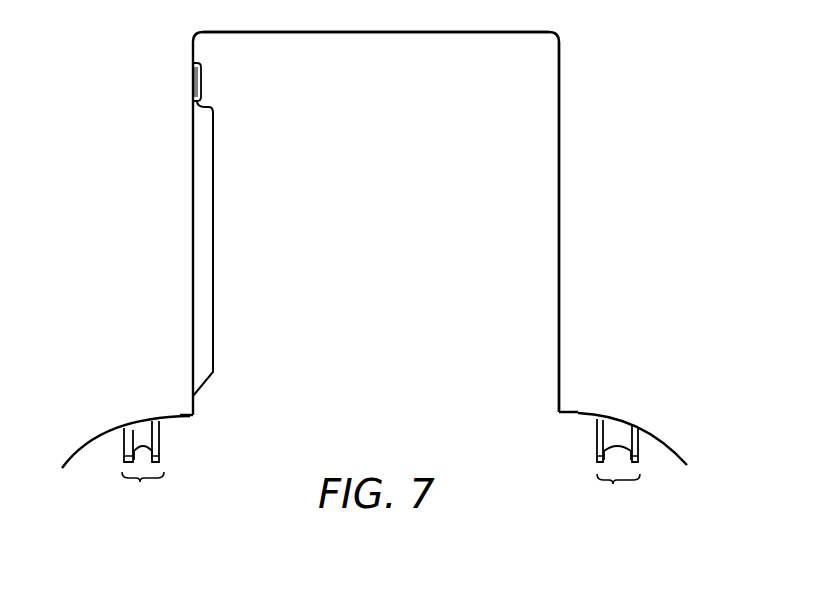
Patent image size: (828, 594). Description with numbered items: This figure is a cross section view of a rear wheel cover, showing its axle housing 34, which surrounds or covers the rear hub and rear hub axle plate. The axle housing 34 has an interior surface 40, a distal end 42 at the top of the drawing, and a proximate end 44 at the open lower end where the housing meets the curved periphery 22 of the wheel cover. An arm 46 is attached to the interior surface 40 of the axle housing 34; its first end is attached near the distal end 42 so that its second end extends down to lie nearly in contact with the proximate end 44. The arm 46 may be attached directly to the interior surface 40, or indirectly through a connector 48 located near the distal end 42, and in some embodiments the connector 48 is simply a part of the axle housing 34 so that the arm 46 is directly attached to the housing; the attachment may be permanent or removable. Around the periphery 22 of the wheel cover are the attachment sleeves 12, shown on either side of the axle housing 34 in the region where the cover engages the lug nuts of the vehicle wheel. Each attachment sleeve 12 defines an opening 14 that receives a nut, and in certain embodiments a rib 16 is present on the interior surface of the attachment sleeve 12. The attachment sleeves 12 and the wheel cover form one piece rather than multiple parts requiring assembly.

The attachment sleeve 12 is at (386, 452).
The opening 14 is at (143, 446).
The rib 16 is at (160, 451).
The periphery 22 is at (126, 432).
The axle housing 34 is at (602, 118).
The interior surface 40 is at (559, 113).
The distal end 42 is at (388, 34).
The proximate end 44 is at (205, 403).
The arm 46 is at (213, 232).
The connector 48 is at (203, 92).